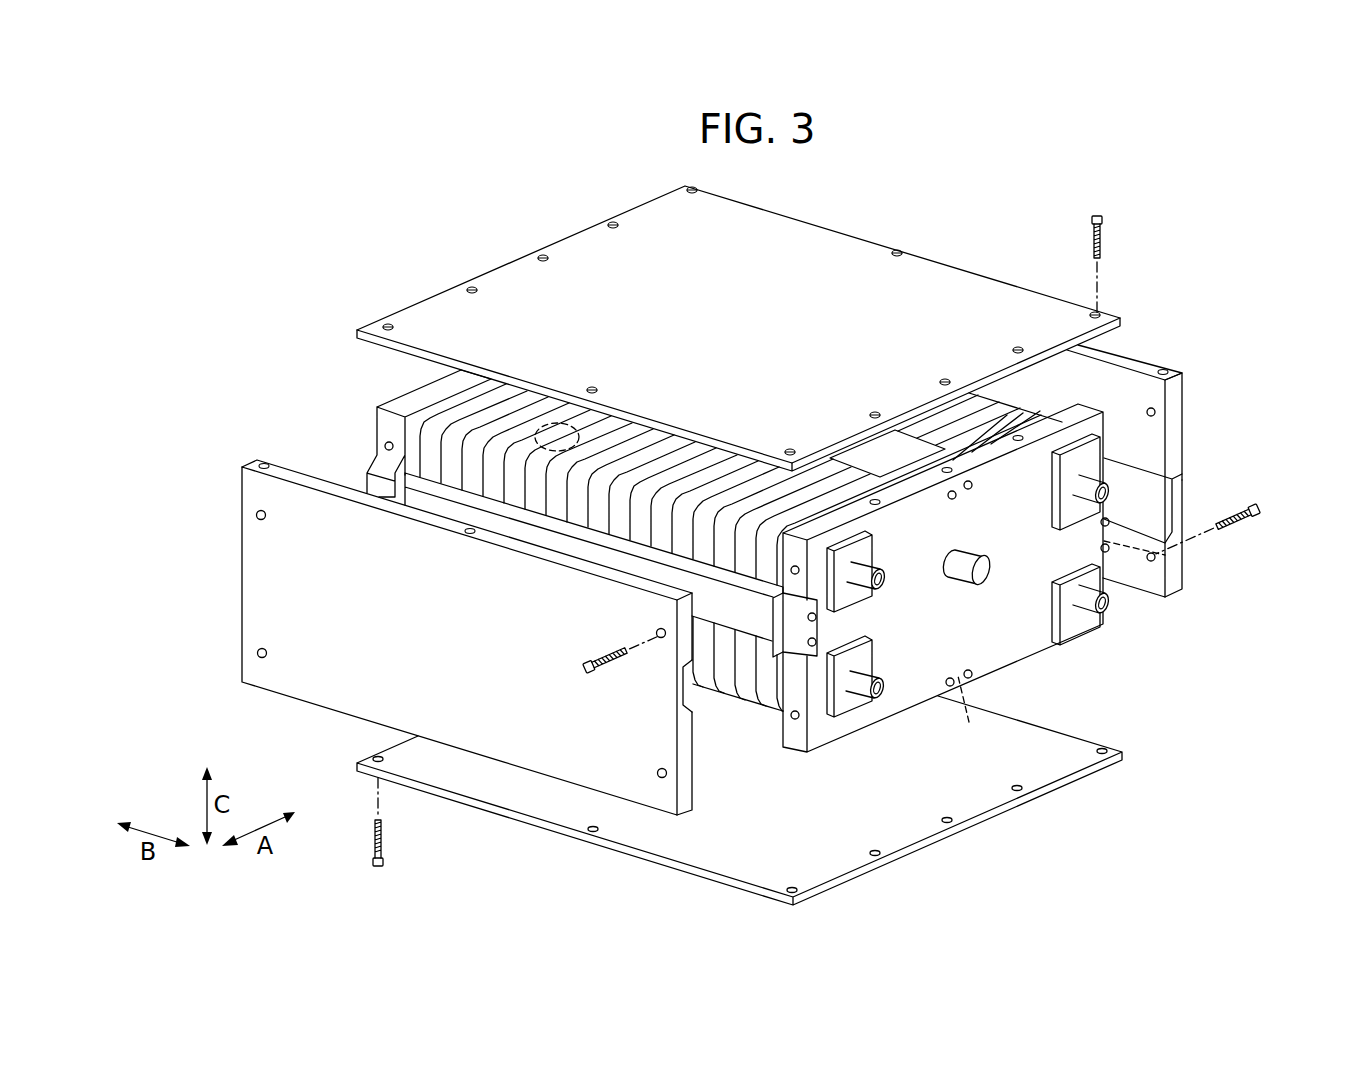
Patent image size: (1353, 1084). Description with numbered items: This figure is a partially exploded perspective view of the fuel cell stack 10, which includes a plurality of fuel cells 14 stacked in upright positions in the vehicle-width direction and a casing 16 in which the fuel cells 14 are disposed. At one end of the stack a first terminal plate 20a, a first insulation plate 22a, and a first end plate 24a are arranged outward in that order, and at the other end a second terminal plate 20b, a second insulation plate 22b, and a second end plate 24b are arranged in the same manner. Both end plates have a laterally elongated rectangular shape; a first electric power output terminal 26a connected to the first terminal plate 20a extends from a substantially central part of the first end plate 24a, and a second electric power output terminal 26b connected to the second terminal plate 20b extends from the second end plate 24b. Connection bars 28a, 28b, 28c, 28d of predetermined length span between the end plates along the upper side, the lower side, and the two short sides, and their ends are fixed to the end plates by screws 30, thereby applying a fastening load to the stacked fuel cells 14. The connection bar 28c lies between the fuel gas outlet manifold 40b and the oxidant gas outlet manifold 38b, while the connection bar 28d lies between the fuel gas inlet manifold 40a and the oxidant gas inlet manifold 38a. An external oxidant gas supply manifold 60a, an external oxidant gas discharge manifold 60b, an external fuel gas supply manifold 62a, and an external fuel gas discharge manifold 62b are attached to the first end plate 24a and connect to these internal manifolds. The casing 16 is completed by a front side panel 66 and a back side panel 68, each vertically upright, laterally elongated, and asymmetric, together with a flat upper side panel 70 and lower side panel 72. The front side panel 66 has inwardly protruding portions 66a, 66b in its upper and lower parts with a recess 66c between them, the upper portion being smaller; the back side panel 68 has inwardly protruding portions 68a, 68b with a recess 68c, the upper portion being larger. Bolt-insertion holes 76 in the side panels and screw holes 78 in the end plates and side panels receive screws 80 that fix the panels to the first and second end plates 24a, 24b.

The fuel cell stack 10 is at (323, 230).
The fuel cells 14 is at (612, 518).
The casing 16 is at (499, 249).
The first terminal plate 20a is at (752, 690).
The second terminal plate 20b is at (448, 472).
The first insulation plate 22a is at (778, 693).
The second insulation plate 22b is at (426, 468).
The first end plate 24a is at (1108, 426).
The second end plate 24b is at (386, 395).
The first electric power output terminal 26a is at (966, 574).
The second electric power output terminal 26b is at (560, 426).
The connection bar 28a is at (857, 455).
The connection bar 28b is at (845, 713).
The connection bar 28c is at (620, 557).
The connection bar 28d is at (1100, 540).
The screws 30 is at (955, 497).
The oxidant gas inlet manifold 38a is at (1186, 477).
The oxidant gas outlet manifold 38b is at (884, 719).
The fuel gas inlet manifold 40a is at (1123, 625).
The fuel gas outlet manifold 40b is at (908, 558).
The external oxidant gas supply manifold 60a is at (1107, 490).
The external oxidant gas discharge manifold 60b is at (874, 691).
The external fuel gas supply manifold 62a is at (1107, 611).
The external fuel gas discharge manifold 62b is at (871, 556).
The front side panel 66 is at (259, 456).
The inwardly protruding portion 66a is at (690, 611).
The inwardly protruding portion 66b is at (694, 798).
The recess 66c is at (691, 694).
The back side panel 68 is at (1190, 411).
The inwardly protruding portion 68a is at (1184, 395).
The inwardly protruding portion 68b is at (1181, 593).
The recess 68c is at (1162, 522).
The upper side panel 70 is at (901, 239).
The lower side panel 72 is at (1049, 741).
The bolt-insertion holes 76 is at (1156, 560).
The screw holes 78 is at (1166, 370).
The screws 80 is at (1104, 247).